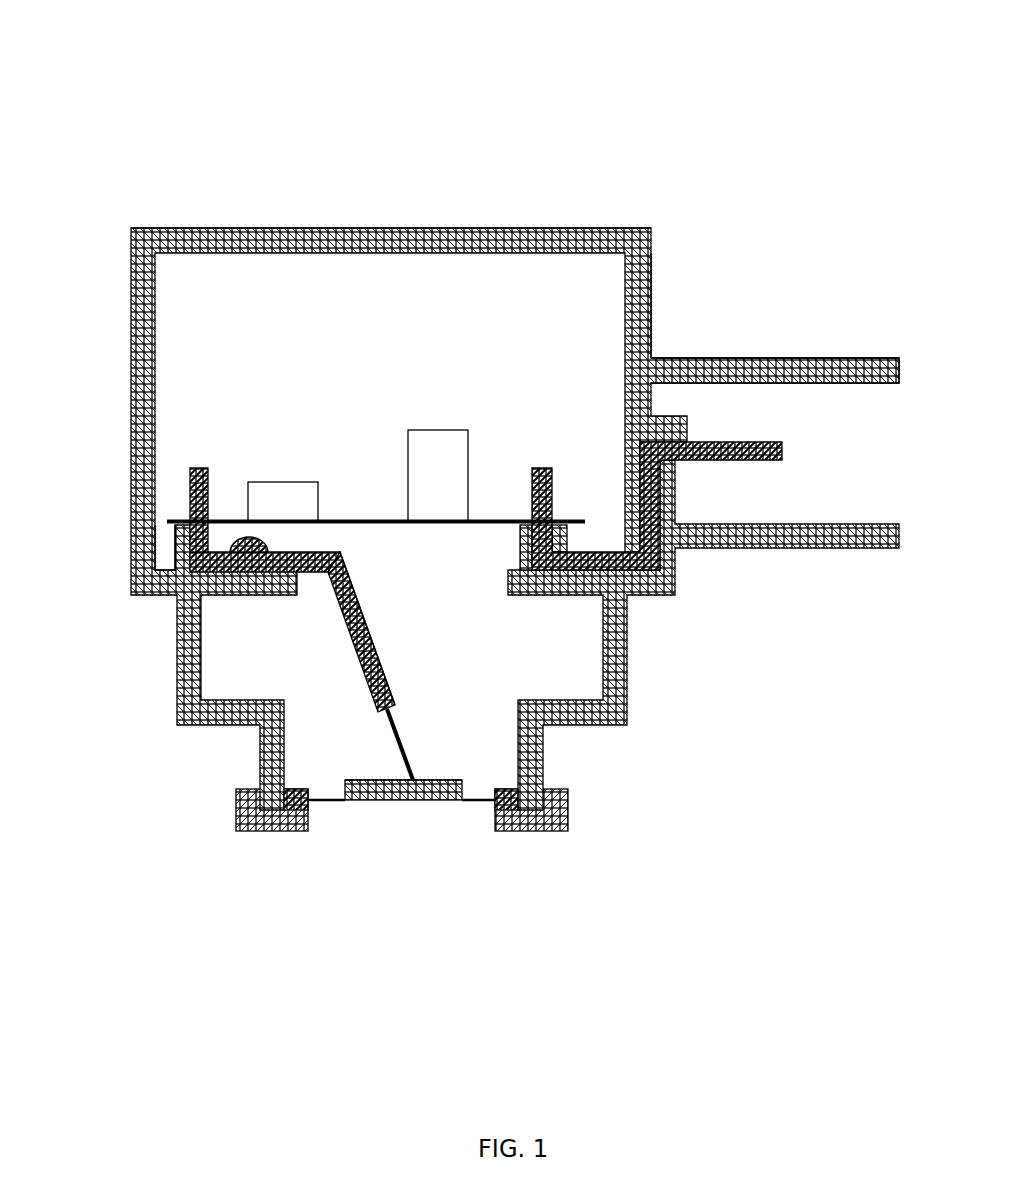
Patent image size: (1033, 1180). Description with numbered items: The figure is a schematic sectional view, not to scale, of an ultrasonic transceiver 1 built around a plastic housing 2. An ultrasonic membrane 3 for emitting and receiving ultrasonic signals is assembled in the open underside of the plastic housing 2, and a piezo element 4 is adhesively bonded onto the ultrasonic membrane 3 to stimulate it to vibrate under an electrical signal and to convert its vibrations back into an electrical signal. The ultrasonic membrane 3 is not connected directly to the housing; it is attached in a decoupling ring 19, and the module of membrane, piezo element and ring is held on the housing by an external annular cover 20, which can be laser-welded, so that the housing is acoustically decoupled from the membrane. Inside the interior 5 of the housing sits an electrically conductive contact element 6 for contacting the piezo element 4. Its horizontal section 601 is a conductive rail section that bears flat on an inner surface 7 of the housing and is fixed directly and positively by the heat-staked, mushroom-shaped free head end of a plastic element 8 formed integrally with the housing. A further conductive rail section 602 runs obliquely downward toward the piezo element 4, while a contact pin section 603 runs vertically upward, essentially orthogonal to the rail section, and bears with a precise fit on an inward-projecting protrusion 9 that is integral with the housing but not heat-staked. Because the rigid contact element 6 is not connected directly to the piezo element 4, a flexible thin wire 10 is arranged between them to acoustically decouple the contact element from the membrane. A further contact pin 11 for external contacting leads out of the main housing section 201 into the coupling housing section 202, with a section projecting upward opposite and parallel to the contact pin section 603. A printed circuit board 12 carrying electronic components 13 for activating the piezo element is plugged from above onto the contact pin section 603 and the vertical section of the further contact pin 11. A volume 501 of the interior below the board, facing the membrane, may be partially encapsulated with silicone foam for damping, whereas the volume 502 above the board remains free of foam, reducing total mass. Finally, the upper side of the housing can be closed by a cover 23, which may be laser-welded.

The ultrasonic transceiver 1 is at (825, 83).
The plastic housing 2 is at (130, 346).
The main housing section 201 is at (652, 273).
The coupling housing section 202 is at (695, 358).
The cover 23 is at (622, 228).
The ultrasonic membrane 3 is at (472, 800).
The piezo element 4 is at (373, 780).
The interior 5 is at (603, 297).
The volume 501 is at (532, 654).
The volume 502 is at (536, 391).
The contact element 6 is at (340, 602).
The horizontal section 601 is at (303, 553).
The conductive rail section 602 is at (373, 650).
The contact pin section 603 is at (210, 482).
The inner surface 7 is at (158, 556).
The plastic element 8 is at (242, 537).
The protrusion 9 is at (167, 569).
The wire 10 is at (407, 739).
The further contact pin 11 is at (747, 442).
The printed circuit board 12 is at (347, 517).
The electronic components 13 is at (440, 420).
The decoupling ring 19 is at (313, 802).
The cover 20 is at (236, 810).